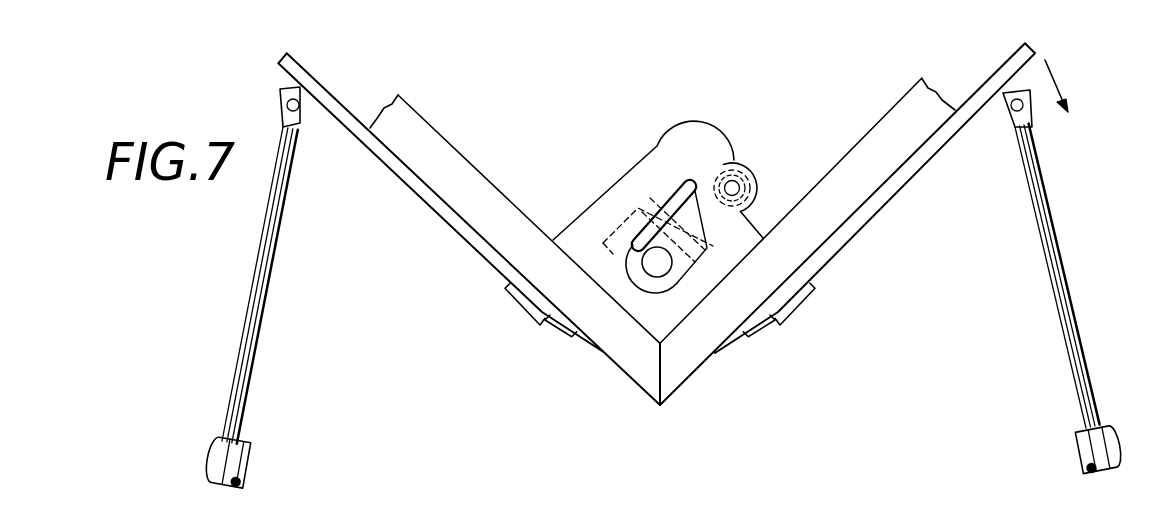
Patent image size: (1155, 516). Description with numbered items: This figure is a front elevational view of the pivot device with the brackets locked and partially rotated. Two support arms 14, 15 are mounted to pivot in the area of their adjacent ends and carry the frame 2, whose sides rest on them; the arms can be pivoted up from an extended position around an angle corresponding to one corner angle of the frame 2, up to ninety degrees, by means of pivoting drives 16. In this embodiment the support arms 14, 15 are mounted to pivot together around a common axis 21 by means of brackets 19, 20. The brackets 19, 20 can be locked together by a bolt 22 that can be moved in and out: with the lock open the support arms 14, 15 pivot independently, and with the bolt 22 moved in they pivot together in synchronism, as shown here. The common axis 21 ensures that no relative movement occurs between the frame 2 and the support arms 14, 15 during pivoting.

The frame 2 is at (457, 183).
The support arm 14 is at (453, 220).
The support arm 15 is at (862, 217).
The pivoting drive 16 is at (252, 320).
The bracket 19 is at (605, 208).
The bracket 20 is at (730, 247).
The common axis 21 is at (657, 262).
The bolt 22 is at (732, 188).